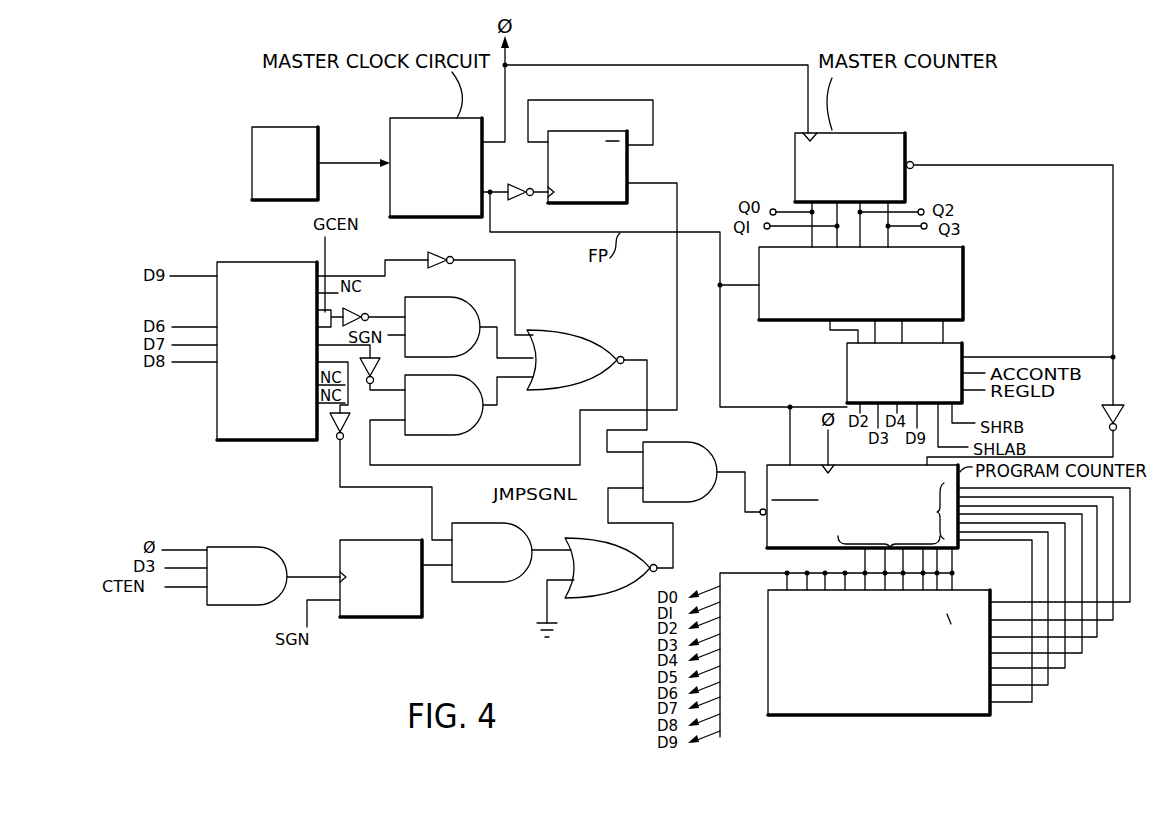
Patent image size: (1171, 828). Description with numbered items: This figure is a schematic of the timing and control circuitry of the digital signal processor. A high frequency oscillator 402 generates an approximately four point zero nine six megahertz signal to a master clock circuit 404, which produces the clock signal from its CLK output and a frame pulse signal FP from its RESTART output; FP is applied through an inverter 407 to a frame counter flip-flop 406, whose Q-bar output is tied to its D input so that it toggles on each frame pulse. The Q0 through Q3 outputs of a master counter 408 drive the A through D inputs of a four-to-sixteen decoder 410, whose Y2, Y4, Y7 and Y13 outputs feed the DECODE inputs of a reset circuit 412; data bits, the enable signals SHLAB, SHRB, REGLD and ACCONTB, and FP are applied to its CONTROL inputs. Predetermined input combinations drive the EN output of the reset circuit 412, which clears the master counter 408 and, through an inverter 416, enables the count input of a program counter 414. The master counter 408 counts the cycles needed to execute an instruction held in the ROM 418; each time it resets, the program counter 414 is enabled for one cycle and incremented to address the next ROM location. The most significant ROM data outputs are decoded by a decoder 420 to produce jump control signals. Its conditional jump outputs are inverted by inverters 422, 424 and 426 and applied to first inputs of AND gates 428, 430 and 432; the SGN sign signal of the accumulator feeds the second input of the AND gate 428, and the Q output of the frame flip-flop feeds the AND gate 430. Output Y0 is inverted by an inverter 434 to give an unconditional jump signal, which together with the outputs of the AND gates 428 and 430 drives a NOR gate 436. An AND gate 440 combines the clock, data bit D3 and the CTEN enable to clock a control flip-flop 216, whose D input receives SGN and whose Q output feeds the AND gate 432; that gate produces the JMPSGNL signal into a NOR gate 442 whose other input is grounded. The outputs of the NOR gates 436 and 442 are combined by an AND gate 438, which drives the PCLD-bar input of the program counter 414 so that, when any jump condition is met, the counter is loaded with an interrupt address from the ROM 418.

The high frequency oscillator 402 is at (316, 127).
The master clock circuit 404 is at (428, 118).
The frame counter flip-flop 406 is at (522, 185).
The inverter 407 is at (628, 172).
The master counter 408 is at (894, 133).
The 4-to-16 decoder 410 is at (965, 270).
The reset circuit 412 is at (965, 345).
The program counter 414 is at (766, 531).
The inverter 416 is at (1118, 415).
The ROM 418 is at (940, 716).
The decoder 420 is at (270, 262).
The inverter 422 is at (356, 305).
The inverter 424 is at (374, 383).
The inverter 426 is at (336, 443).
The AND gate 428 is at (480, 312).
The AND gate 430 is at (463, 436).
The AND gate 432 is at (492, 584).
The inverter 434 is at (440, 266).
The NOR gate 436 is at (610, 348).
The AND gate 438 is at (715, 466).
The AND gate 440 is at (244, 608).
The NOR gate 442 is at (607, 600).
The control flip-flop 216 is at (398, 619).